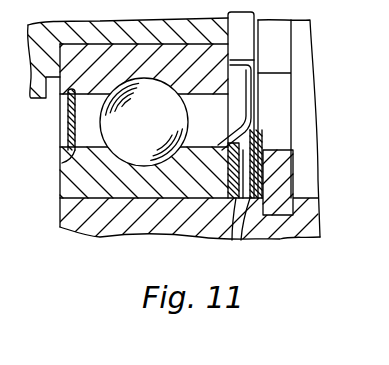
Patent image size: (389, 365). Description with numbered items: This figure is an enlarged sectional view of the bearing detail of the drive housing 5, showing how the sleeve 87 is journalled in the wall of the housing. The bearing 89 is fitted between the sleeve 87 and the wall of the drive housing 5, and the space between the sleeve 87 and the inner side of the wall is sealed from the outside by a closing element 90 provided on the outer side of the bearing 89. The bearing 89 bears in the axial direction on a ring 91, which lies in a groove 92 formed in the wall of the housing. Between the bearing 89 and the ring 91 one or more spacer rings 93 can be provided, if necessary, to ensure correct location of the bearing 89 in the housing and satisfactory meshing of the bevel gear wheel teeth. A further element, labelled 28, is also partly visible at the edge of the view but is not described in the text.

The drive housing 5 is at (99, 238).
The housing 28 is at (8, 177).
The sleeve 87 is at (122, 13).
The bearing 89 is at (63, 163).
The closing element 90 is at (258, 76).
The ring 91 is at (283, 117).
The groove 92 is at (284, 237).
The spacer ring 93 is at (240, 232).